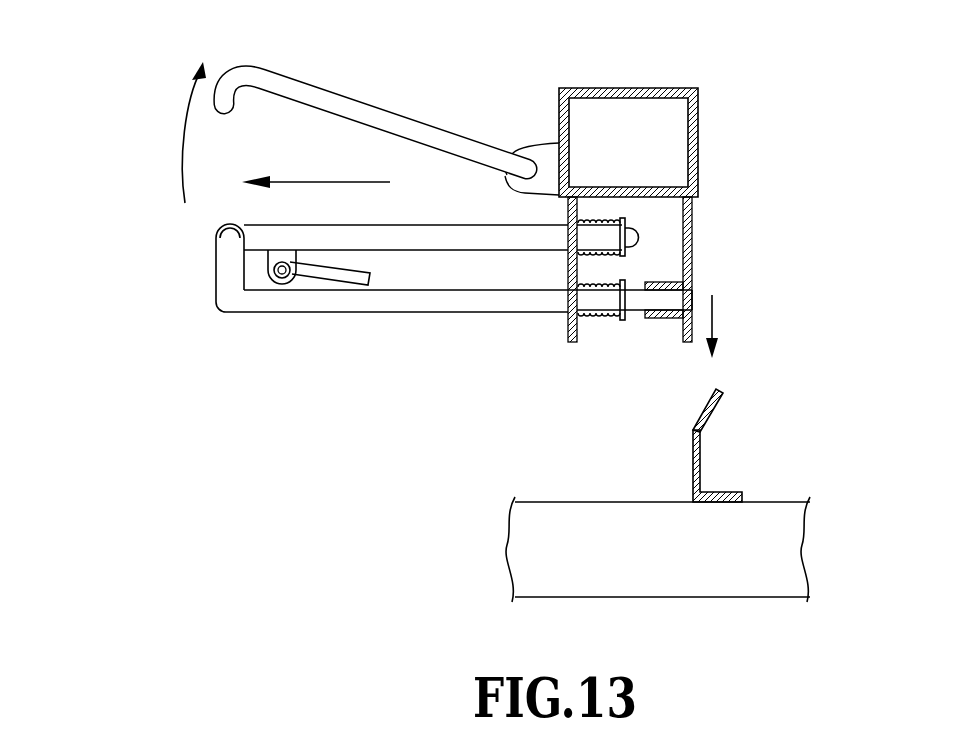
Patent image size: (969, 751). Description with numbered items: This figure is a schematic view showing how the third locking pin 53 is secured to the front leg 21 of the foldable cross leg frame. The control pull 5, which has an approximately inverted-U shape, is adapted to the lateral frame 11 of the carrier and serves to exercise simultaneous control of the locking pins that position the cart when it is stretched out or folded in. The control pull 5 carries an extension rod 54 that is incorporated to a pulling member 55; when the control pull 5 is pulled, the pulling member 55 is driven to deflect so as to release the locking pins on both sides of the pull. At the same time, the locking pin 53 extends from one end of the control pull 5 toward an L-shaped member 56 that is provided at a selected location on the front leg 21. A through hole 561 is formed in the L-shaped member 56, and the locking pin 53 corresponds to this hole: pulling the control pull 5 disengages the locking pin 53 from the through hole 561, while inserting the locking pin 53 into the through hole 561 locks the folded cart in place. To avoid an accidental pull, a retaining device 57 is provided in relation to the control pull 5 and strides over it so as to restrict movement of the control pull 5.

The control pull 5 is at (204, 296).
The lateral frame 11 is at (697, 107).
The front leg 21 is at (597, 517).
The locking pin 53 is at (652, 297).
The extension rod 54 is at (340, 275).
The pulling member 55 is at (472, 300).
The L-shaped member 56 is at (720, 402).
The through hole 561 is at (700, 455).
The retaining device 57 is at (415, 130).